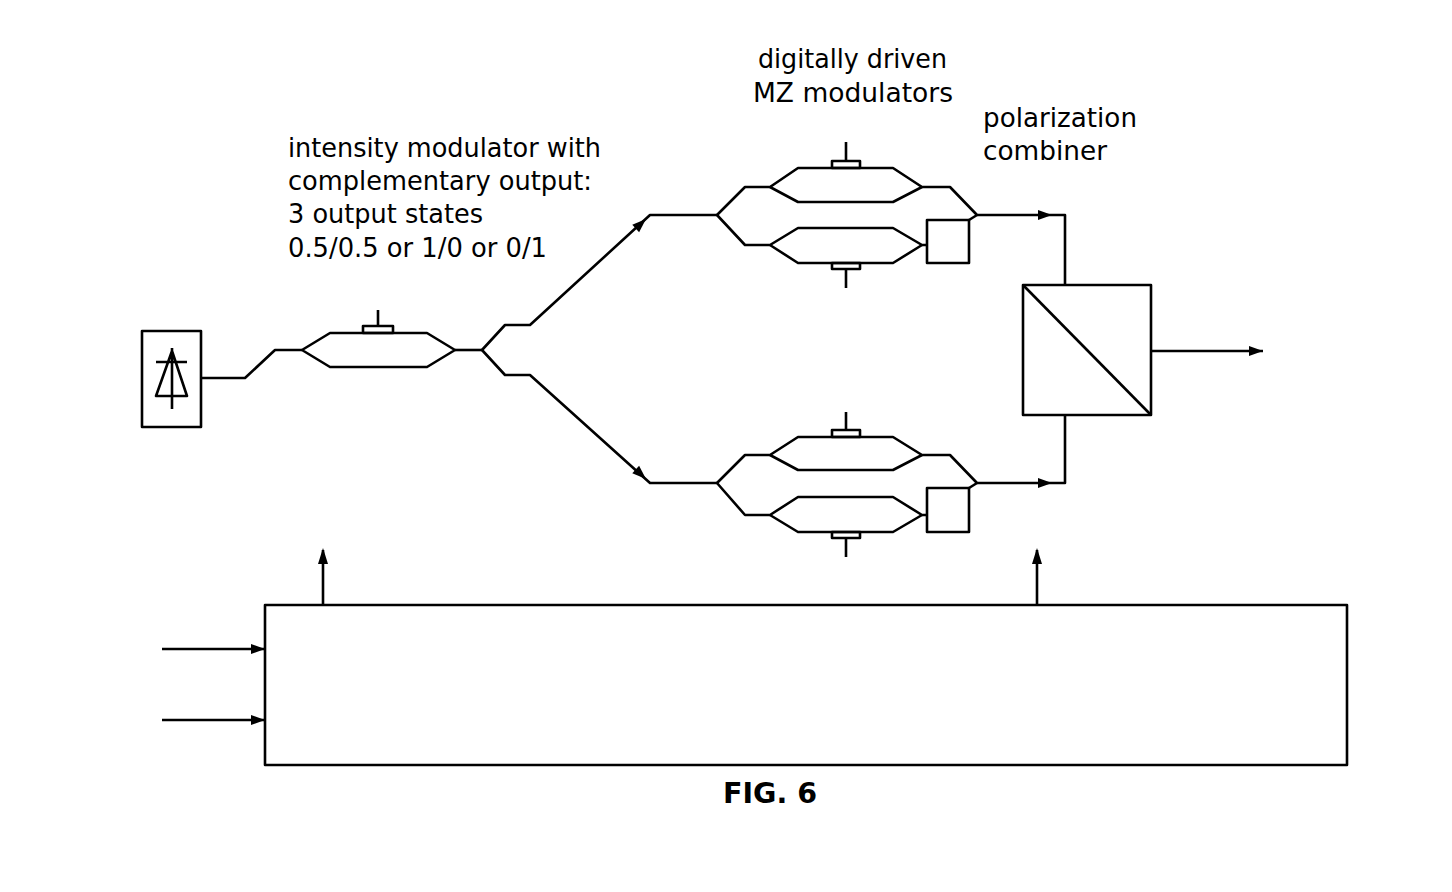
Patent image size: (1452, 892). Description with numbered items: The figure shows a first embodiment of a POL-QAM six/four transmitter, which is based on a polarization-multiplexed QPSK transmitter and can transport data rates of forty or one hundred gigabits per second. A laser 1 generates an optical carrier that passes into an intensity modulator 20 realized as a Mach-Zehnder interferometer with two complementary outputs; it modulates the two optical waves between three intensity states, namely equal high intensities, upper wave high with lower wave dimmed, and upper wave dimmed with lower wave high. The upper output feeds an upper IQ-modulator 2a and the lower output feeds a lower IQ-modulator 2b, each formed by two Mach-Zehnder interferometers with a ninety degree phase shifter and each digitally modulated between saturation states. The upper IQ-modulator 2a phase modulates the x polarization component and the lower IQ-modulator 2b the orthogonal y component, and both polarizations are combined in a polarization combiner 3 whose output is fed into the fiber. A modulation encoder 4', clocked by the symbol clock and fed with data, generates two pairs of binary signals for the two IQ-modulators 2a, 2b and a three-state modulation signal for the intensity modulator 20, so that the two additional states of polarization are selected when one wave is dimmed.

The laser 1 is at (172, 331).
The intensity modulator 20 is at (257, 365).
The upper IQ-modulator 2a is at (727, 205).
The lower IQ-modulator 2b is at (727, 467).
The polarization combiner 3 is at (1023, 349).
The modulation encoder 4' is at (751, 656).